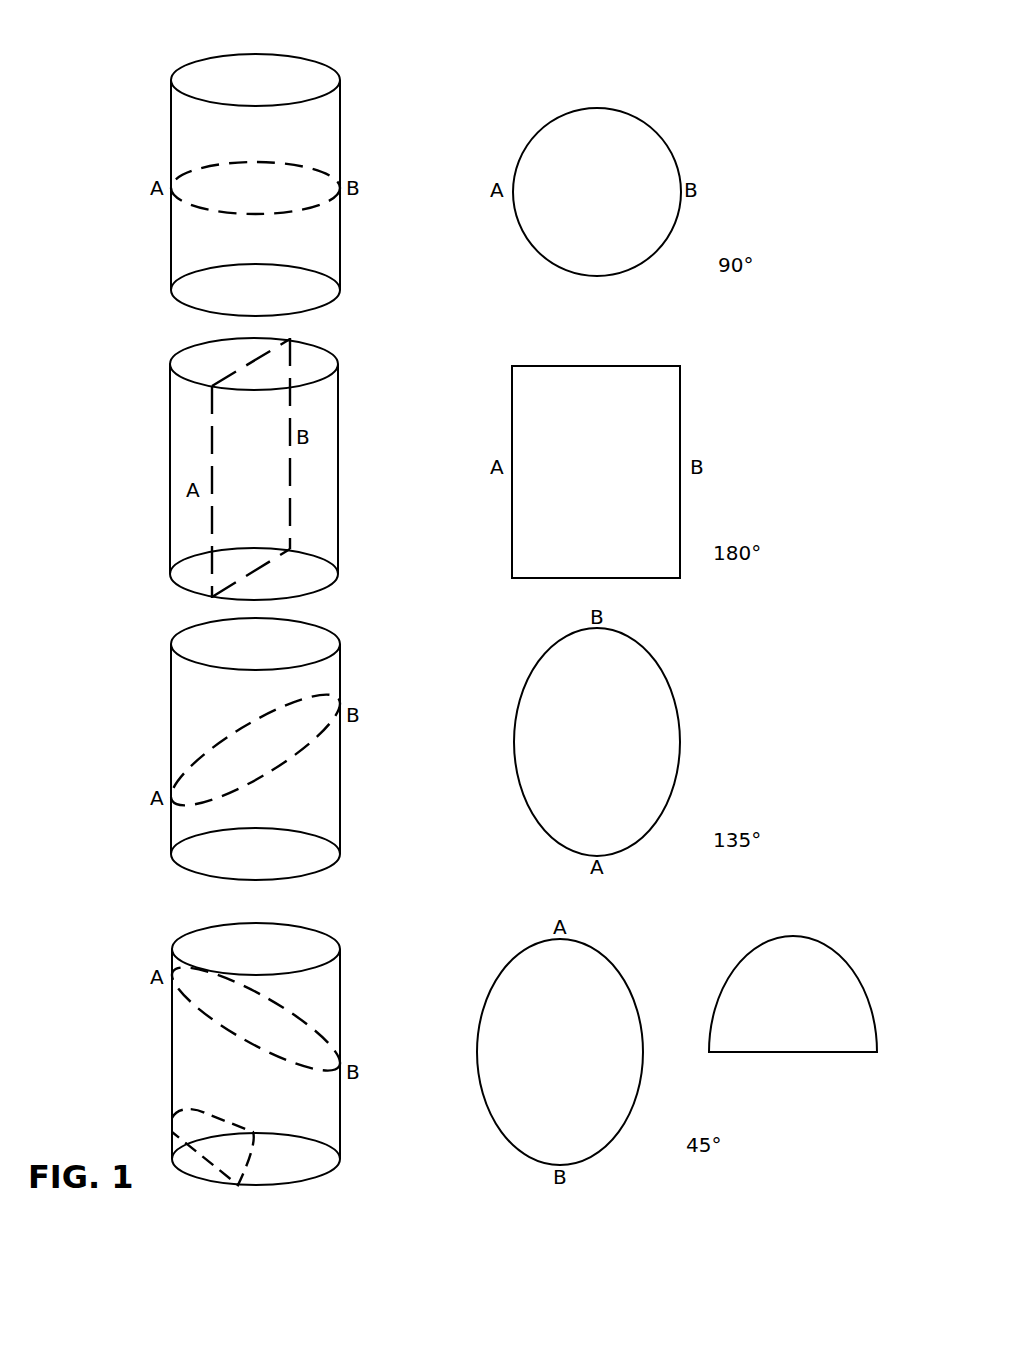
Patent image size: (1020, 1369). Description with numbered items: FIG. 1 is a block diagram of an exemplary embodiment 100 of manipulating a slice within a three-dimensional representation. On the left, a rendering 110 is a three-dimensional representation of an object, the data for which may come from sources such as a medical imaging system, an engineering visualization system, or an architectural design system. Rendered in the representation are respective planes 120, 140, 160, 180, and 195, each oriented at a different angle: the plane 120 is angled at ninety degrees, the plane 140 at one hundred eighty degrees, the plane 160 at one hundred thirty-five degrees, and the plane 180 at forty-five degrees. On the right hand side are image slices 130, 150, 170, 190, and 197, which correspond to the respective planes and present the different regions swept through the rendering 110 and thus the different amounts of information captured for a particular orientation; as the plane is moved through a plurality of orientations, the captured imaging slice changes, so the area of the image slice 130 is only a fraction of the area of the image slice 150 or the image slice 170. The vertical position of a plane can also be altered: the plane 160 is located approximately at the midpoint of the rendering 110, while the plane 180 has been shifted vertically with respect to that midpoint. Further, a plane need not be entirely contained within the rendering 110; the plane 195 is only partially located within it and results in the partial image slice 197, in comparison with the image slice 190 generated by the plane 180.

The embodiment of manipulating a slice within a 3D representation 100 is at (729, 30).
The rendering 110 is at (340, 125).
The plane 120 is at (202, 167).
The image slice 130 is at (664, 143).
The plane 140 is at (212, 432).
The image slice 150 is at (680, 414).
The plane 160 is at (210, 752).
The image slice 170 is at (670, 683).
The plane 180 is at (327, 1037).
The image slice 190 is at (627, 985).
The plane 195 is at (190, 1112).
The partial image slice 197 is at (846, 966).